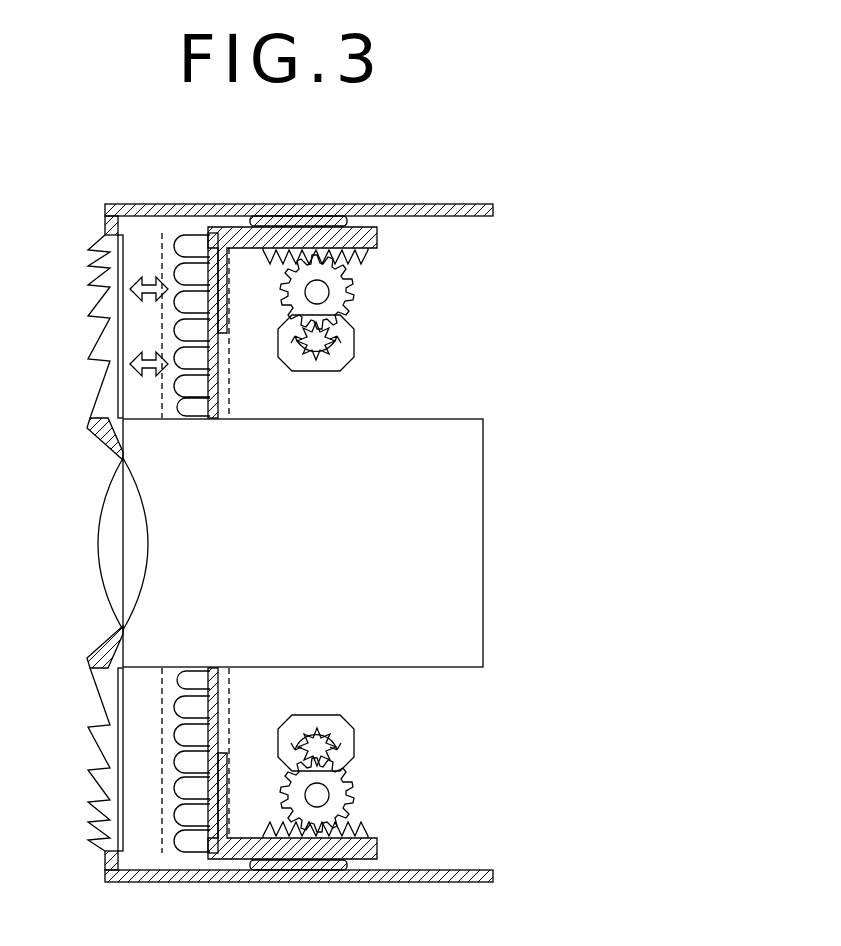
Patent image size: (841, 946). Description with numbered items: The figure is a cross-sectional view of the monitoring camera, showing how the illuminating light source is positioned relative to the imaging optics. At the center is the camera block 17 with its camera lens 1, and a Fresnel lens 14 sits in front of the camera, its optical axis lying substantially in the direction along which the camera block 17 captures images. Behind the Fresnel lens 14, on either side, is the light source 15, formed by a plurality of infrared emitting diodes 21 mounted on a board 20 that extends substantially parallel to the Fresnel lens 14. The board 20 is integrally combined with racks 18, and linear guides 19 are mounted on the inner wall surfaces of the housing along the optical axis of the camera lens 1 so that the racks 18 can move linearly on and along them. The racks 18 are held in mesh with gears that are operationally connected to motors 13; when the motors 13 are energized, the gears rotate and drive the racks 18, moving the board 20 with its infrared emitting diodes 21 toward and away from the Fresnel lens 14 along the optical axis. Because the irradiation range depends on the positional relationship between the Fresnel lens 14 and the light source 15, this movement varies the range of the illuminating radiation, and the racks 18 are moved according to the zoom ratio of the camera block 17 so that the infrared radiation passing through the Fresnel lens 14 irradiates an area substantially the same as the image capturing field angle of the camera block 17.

The camera lens 1 is at (112, 545).
The motors 13 is at (343, 333).
The Fresnel lens 14 is at (100, 302).
The light source 15 is at (168, 235).
The camera block 17 is at (469, 480).
The racks 18 is at (368, 252).
The linear guides 19 is at (311, 213).
The board 20 is at (213, 388).
The infrared emitting diodes 21 is at (190, 247).